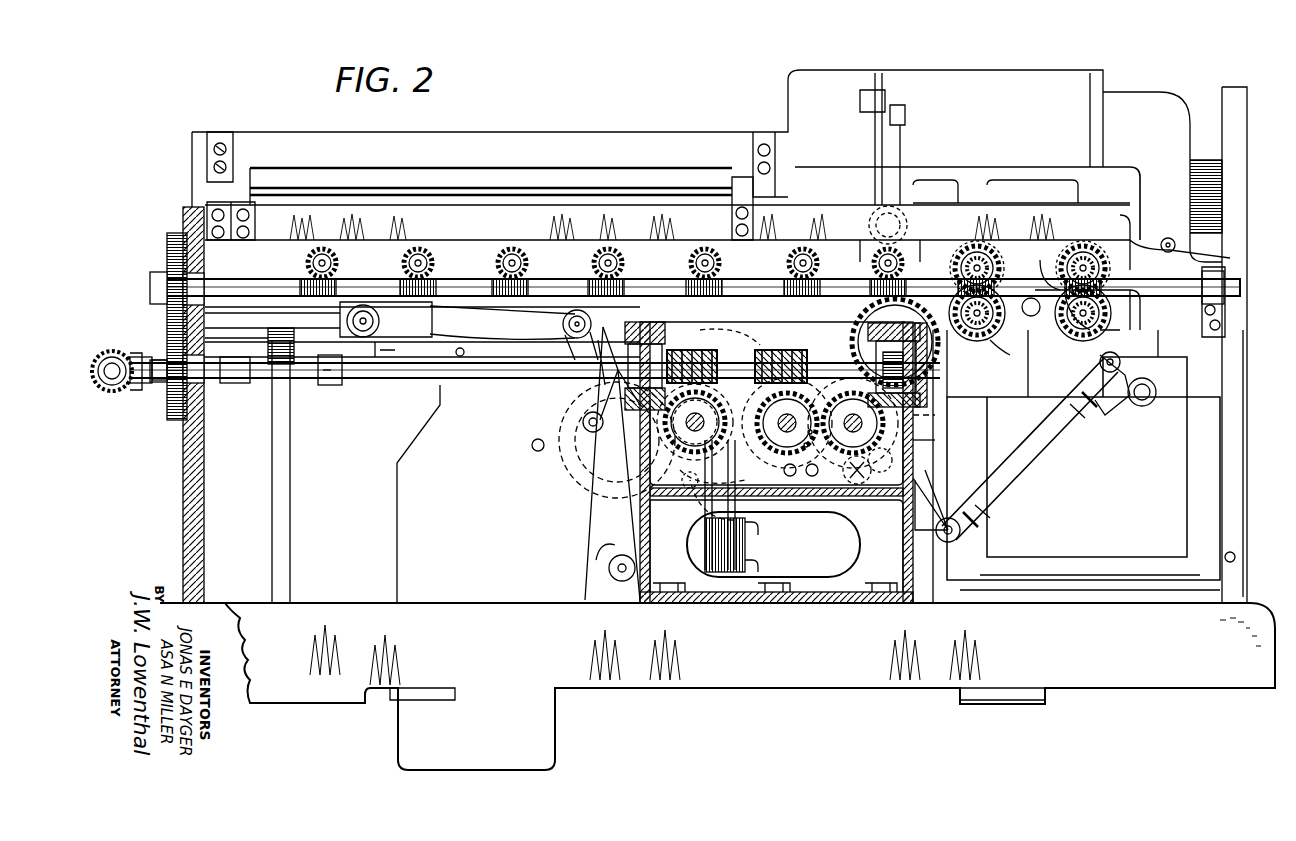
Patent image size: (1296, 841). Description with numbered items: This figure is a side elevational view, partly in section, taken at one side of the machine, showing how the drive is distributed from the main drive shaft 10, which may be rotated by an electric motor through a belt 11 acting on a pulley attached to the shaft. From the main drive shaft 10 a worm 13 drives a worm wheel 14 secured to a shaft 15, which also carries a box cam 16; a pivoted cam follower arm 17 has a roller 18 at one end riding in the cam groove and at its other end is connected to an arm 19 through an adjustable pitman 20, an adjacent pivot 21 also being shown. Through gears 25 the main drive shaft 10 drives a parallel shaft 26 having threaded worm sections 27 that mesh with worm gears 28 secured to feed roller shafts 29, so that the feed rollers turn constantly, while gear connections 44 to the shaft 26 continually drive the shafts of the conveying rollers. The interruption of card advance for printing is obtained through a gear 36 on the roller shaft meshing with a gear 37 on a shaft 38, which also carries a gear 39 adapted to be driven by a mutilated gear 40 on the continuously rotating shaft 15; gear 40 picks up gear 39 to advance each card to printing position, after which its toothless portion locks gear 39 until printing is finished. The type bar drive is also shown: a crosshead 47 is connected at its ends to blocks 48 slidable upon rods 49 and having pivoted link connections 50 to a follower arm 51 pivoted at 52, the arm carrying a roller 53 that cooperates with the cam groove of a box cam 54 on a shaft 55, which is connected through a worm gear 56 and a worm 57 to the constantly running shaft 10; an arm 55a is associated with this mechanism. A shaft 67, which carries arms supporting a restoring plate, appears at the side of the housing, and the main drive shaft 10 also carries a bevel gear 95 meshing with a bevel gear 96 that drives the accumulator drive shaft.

The main drive shaft 10 is at (362, 380).
The belt 11 is at (292, 445).
The worm 13 is at (778, 350).
The worm wheel 14 is at (735, 356).
The shaft 15 is at (855, 392).
The box cam 16 is at (822, 478).
The pivoted cam follower arm 17 is at (930, 490).
The roller 18 is at (782, 478).
The arm 19 is at (1120, 378).
The adjustable pitman 20 is at (1025, 455).
The pivot stud 21 is at (1148, 408).
The gears 25 is at (167, 238).
The parallel shaft 26 is at (248, 284).
The threaded worm sections 27 is at (1058, 278).
The worm gears 28 is at (1000, 345).
The feed roller shafts 29 is at (1083, 313).
The gear 36 is at (935, 352).
The gear 37 is at (935, 418).
The shaft 38 is at (935, 441).
The gear 39 is at (840, 455).
The mutilated gear 40 is at (855, 500).
The gear connections 44 is at (402, 268).
The crosshead 47 is at (392, 353).
The blocks 48 is at (345, 340).
The rods 49 is at (258, 325).
The pivoted link connections 50 is at (455, 325).
The follower arm 51 is at (598, 530).
The pivot 52 is at (610, 570).
The roller 53 is at (590, 470).
The box cam 54 is at (600, 345).
The shaft 55 is at (678, 436).
The arm 55a is at (580, 405).
The worm gear 56 is at (696, 450).
The worm 57 is at (690, 350).
The shaft 67 is at (532, 450).
The bevel gear 95 is at (140, 350).
The bevel gear 96 is at (108, 390).